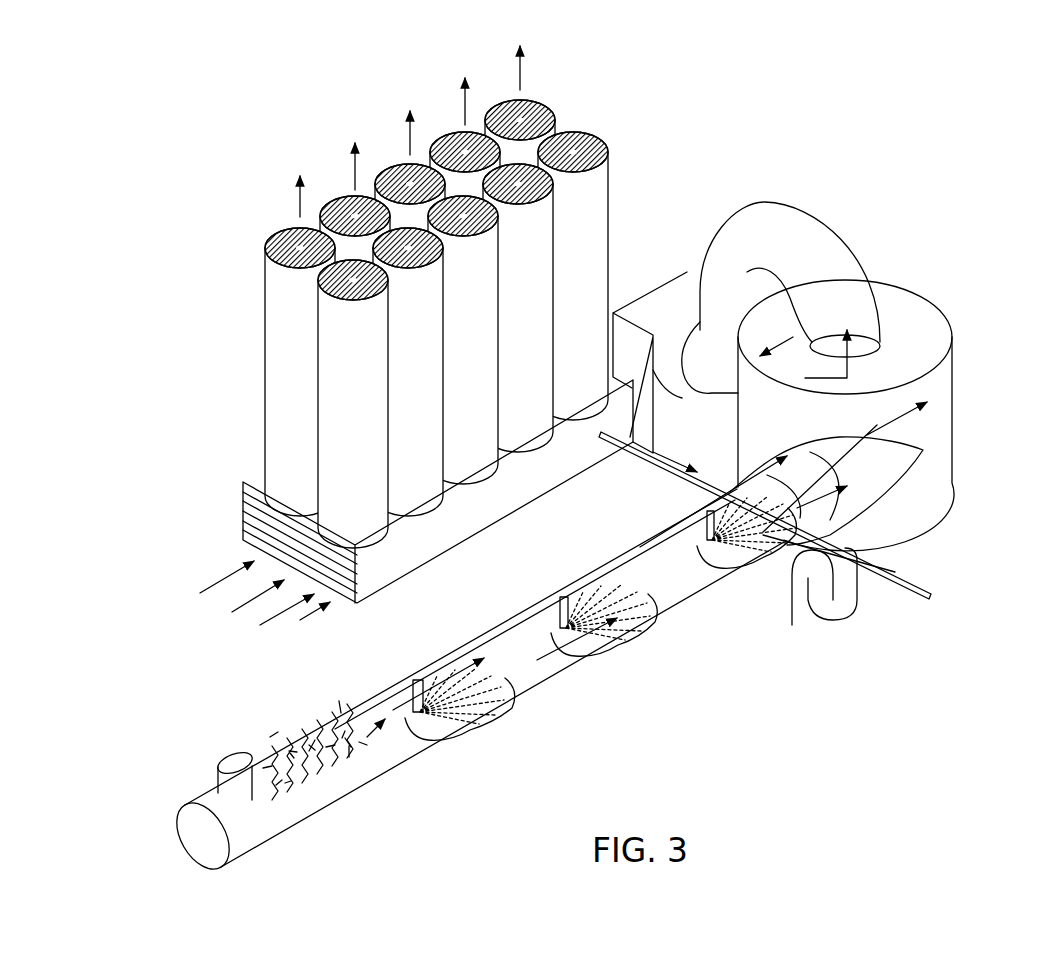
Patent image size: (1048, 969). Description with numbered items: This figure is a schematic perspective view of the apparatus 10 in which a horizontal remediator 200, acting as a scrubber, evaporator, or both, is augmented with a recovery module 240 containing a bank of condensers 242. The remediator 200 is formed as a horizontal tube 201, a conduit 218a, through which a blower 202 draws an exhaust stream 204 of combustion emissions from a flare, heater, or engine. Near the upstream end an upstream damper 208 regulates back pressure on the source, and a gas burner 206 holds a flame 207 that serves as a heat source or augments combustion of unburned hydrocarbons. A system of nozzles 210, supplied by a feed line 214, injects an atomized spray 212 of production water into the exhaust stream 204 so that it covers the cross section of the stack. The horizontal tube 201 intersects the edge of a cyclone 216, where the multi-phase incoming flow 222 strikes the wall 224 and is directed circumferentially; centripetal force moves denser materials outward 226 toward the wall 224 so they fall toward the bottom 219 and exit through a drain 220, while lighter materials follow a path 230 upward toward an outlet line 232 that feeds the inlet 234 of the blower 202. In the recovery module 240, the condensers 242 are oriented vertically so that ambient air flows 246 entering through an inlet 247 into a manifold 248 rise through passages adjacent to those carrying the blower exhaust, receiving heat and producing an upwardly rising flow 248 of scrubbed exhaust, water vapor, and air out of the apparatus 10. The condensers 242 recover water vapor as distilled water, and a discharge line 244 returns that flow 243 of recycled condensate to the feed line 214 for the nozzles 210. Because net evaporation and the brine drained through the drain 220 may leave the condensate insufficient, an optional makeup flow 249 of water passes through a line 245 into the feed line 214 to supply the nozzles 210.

The apparatus 10 is at (138, 136).
The horizontal remediator 200 is at (677, 618).
The horizontal tube 201 is at (725, 578).
The blower 202 is at (662, 300).
The exhaust stream 204 is at (388, 774).
The gas burner 206 is at (392, 790).
The flame 207 is at (385, 790).
The upstream damper 208 is at (232, 756).
The nozzles 210 is at (408, 681).
The atomized spray 212 is at (452, 688).
The feed line 214 is at (490, 626).
The cyclone 216 is at (957, 446).
The conduit 218a is at (323, 805).
The bottom 219 is at (888, 533).
The drain 220 is at (800, 622).
The incoming flow 222 is at (897, 408).
The wall 224 is at (953, 413).
The outward movement 226 is at (774, 340).
The path 230 is at (830, 383).
The outlet line 232 is at (815, 247).
The inlet 234 is at (712, 373).
The recovery module 240 is at (220, 366).
The condensers 242 is at (598, 246).
The flow of recycled condensate 243 is at (670, 455).
The discharge line 244 is at (600, 462).
The line 245 is at (932, 596).
The ambient air flow 246 is at (200, 593).
The inlet 247 is at (300, 620).
The manifold 248 is at (297, 197).
The makeup flow 249 is at (888, 565).